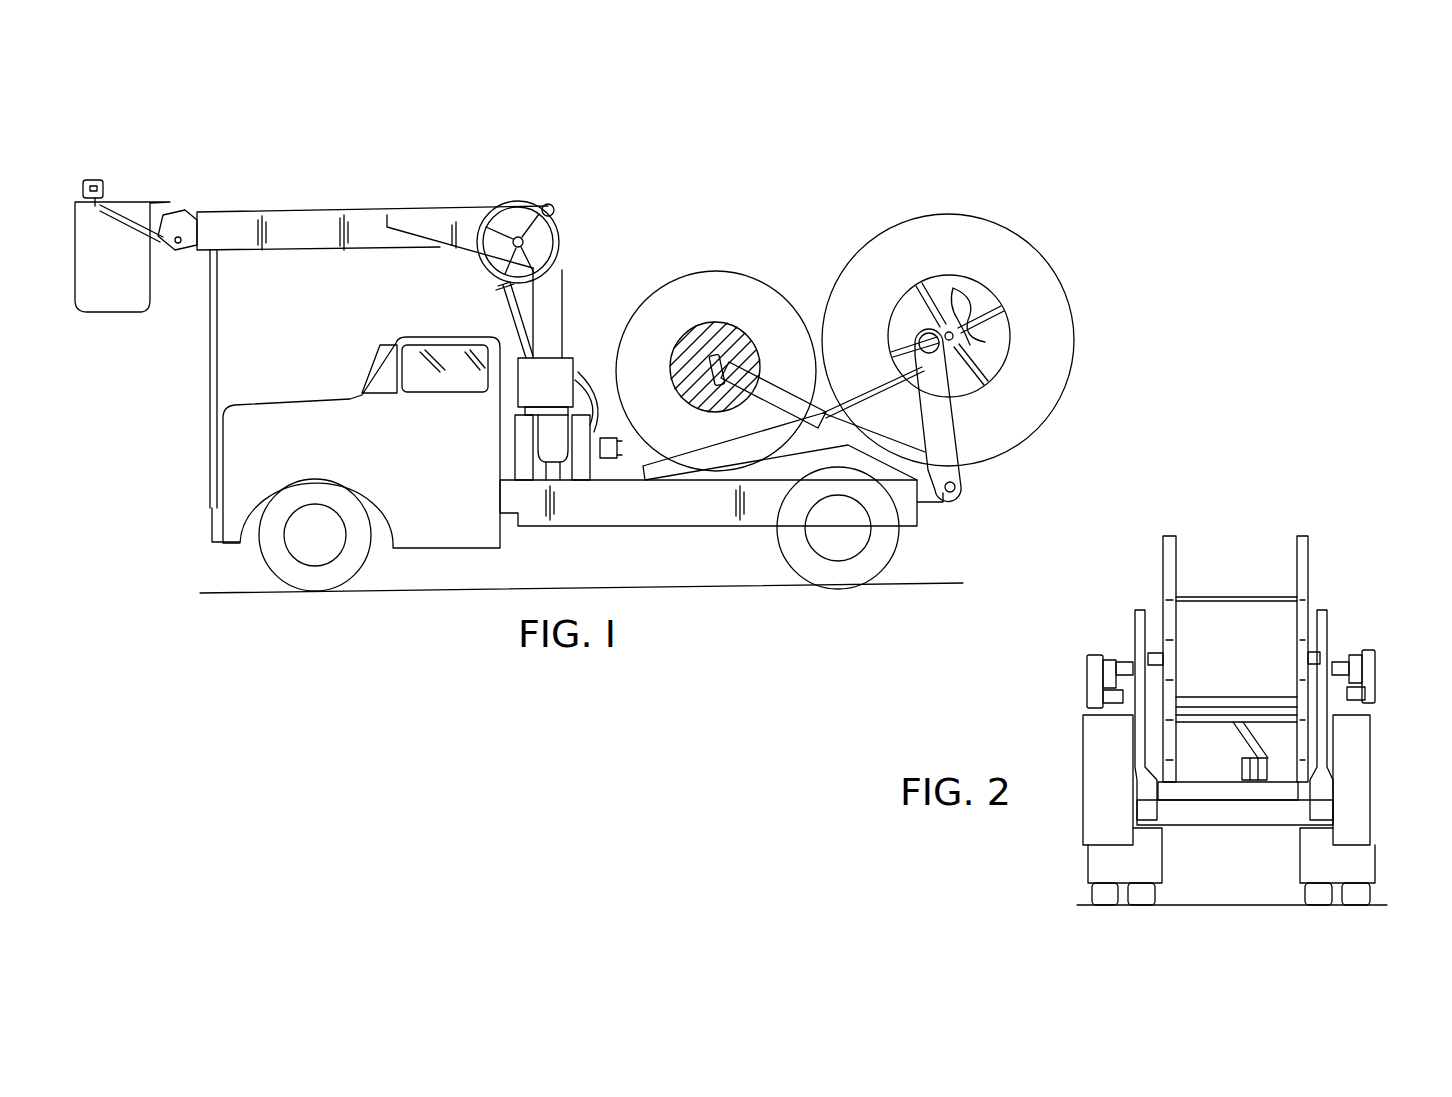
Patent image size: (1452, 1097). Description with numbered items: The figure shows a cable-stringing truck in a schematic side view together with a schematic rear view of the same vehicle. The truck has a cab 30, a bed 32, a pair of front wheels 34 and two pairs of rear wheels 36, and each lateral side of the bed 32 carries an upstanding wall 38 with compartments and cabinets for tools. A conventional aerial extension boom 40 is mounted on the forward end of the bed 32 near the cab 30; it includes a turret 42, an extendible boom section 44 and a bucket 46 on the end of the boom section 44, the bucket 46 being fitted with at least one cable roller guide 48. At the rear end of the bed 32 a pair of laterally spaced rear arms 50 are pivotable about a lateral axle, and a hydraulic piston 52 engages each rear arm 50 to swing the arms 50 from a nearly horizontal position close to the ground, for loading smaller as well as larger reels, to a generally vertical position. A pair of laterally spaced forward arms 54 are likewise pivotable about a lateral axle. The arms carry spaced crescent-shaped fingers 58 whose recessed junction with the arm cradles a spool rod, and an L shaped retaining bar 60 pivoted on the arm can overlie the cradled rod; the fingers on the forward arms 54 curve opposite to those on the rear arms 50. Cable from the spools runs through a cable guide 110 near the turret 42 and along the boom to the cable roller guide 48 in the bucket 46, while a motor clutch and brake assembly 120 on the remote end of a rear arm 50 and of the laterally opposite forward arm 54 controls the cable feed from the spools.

In FIG. 1, the cab 30 is at (424, 468).
In FIG. 1, the bed 32 is at (704, 519).
In FIG. 2, the bed 32 is at (1235, 815).
In FIG. 1, the front wheels 34 is at (330, 547).
In FIG. 1, the rear wheels 36 is at (853, 539).
In FIG. 2, the rear wheels 36 is at (1110, 898).
In FIG. 2, the upstanding wall 38 is at (1121, 785).
In FIG. 1, the aerial extension boom 40 is at (553, 194).
In FIG. 1, the turret 42 is at (578, 372).
In FIG. 1, the extendible boom section 44 is at (317, 203).
In FIG. 1, the bucket 46 is at (131, 276).
In FIG. 1, the cable roller guide 48 is at (98, 178).
In FIG. 1, the rear arms 50 is at (953, 422).
In FIG. 2, the rear arms 50 is at (1142, 697).
In FIG. 1, the hydraulic piston 52 is at (877, 400).
In FIG. 1, the forward arms 54 is at (775, 398).
In FIG. 1, the fingers 58 is at (1007, 328).
In FIG. 1, the L shaped retaining bar 60 is at (723, 357).
In FIG. 1, the cable guide 110 is at (633, 449).
In FIG. 2, the cable guide 110 is at (1240, 767).
In FIG. 1, the motor clutch and brake assembly 120 is at (928, 352).
In FIG. 2, the motor clutch and brake assembly 120 is at (1088, 672).